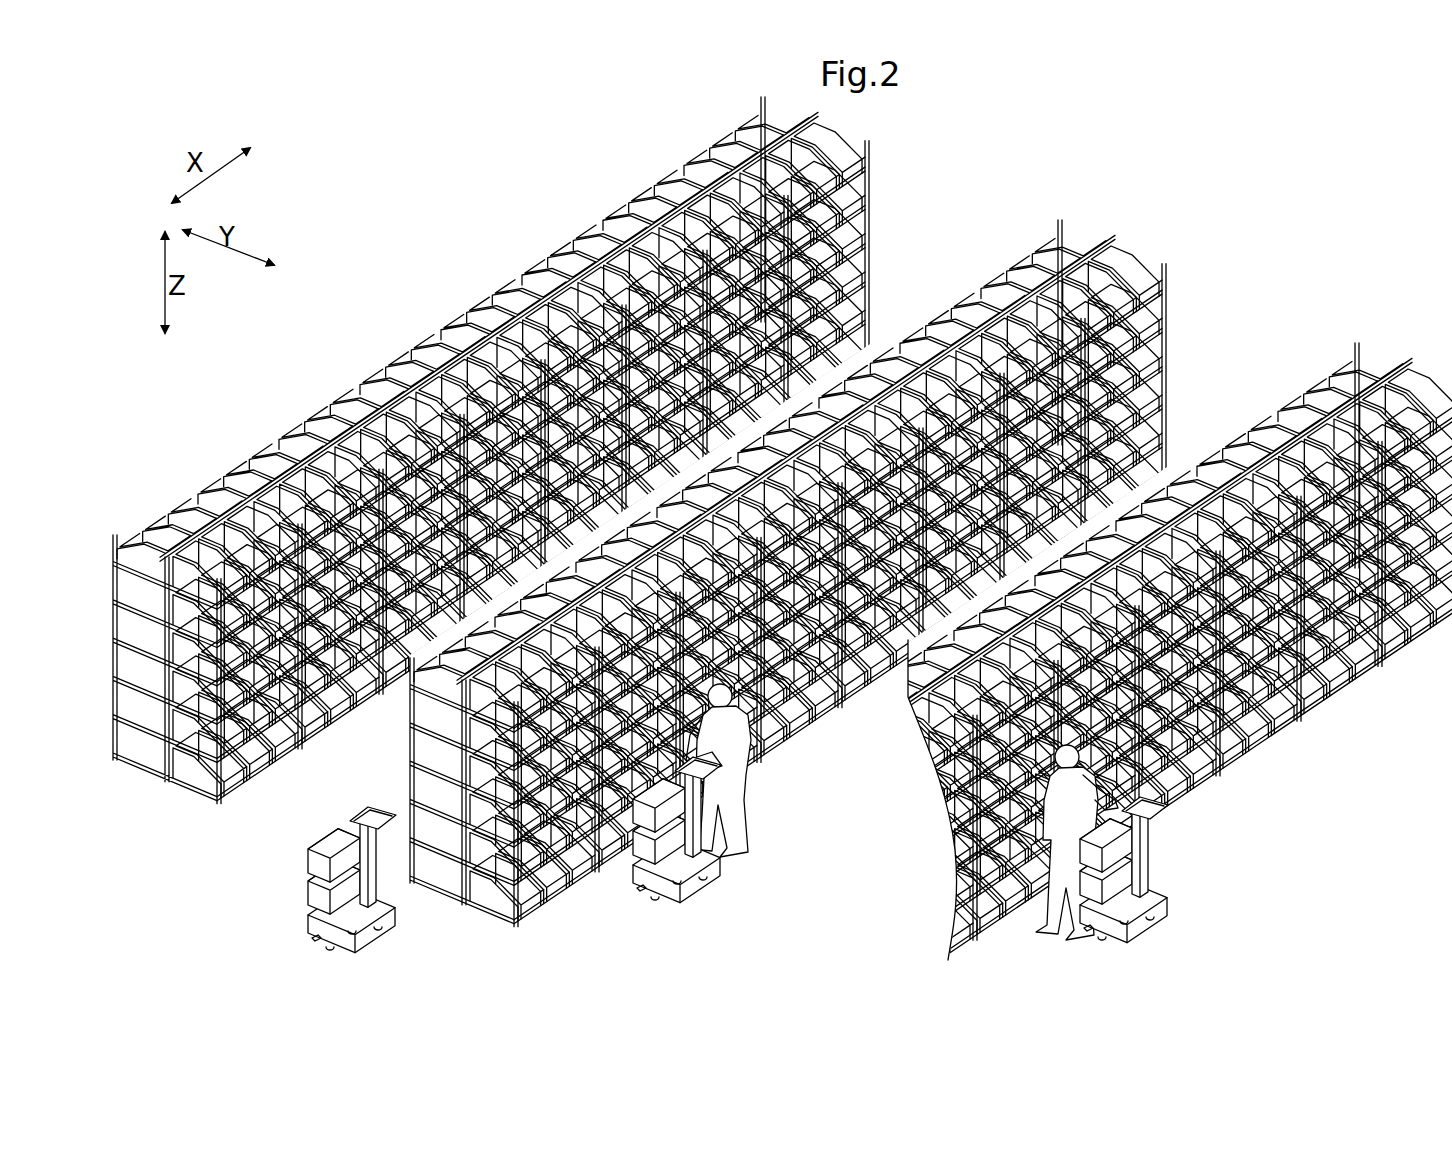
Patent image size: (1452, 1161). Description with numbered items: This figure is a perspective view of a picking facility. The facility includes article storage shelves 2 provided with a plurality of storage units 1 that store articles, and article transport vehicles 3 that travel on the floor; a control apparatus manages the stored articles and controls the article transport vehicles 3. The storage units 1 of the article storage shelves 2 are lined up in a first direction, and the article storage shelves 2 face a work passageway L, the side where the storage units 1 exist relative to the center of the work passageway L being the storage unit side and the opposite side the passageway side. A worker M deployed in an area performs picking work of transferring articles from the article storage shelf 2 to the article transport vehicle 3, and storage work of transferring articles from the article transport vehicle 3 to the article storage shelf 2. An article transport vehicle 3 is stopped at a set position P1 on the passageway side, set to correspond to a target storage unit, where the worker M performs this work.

The storage unit 1 is at (390, 358).
The article storage shelf 2 is at (782, 572).
The article transport vehicle 3 is at (750, 866).
The worker M is at (768, 842).
The set position P1 is at (682, 910).
The work passageway L is at (265, 832).